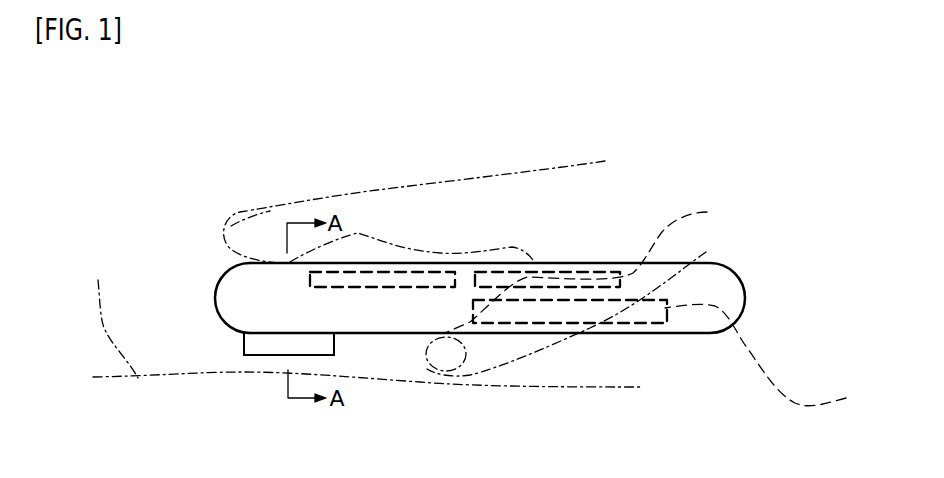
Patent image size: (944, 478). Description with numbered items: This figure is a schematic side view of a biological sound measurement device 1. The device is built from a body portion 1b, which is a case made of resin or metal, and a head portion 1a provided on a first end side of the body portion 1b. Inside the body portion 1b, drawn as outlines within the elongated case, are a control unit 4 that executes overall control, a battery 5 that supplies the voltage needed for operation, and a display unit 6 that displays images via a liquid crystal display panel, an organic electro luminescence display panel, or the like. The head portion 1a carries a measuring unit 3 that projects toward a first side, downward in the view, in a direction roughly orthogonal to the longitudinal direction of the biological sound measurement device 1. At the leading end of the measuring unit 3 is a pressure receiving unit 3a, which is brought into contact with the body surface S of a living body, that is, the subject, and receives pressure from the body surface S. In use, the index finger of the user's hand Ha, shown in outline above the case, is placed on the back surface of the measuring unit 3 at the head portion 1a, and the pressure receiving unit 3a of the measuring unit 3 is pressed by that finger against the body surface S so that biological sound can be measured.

The biological sound measurement device 1 is at (489, 240).
The head portion 1a is at (240, 292).
The body portion 1b is at (563, 270).
The measuring unit 3 is at (274, 404).
The pressure receiving unit 3a is at (262, 356).
The control unit 4 is at (587, 268).
The battery 5 is at (765, 357).
The display unit 6 is at (394, 283).
The user's hand Ha is at (368, 191).
The body surface S is at (115, 315).